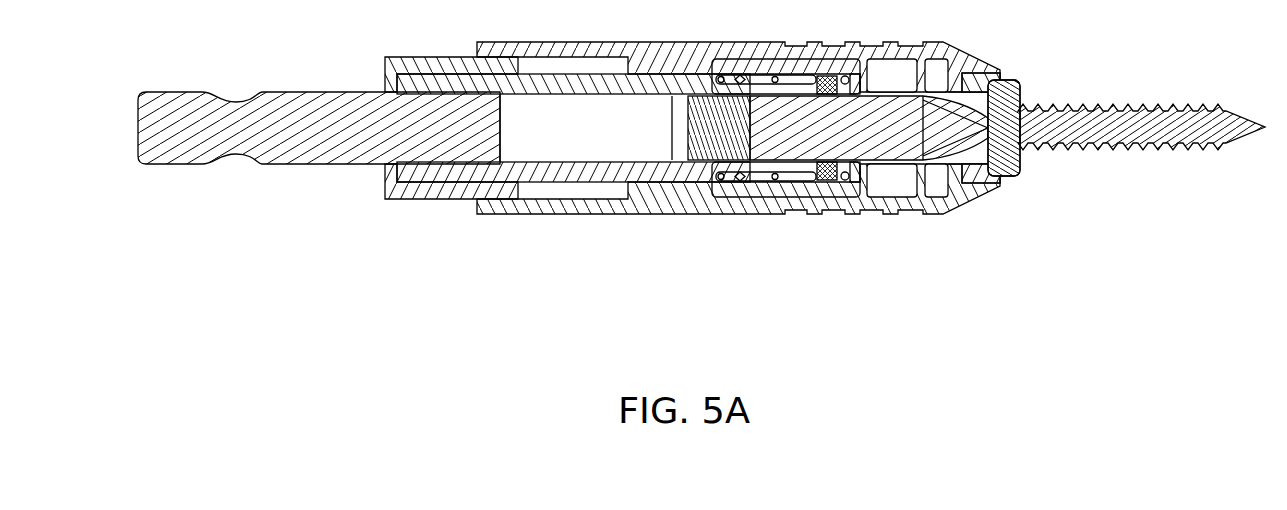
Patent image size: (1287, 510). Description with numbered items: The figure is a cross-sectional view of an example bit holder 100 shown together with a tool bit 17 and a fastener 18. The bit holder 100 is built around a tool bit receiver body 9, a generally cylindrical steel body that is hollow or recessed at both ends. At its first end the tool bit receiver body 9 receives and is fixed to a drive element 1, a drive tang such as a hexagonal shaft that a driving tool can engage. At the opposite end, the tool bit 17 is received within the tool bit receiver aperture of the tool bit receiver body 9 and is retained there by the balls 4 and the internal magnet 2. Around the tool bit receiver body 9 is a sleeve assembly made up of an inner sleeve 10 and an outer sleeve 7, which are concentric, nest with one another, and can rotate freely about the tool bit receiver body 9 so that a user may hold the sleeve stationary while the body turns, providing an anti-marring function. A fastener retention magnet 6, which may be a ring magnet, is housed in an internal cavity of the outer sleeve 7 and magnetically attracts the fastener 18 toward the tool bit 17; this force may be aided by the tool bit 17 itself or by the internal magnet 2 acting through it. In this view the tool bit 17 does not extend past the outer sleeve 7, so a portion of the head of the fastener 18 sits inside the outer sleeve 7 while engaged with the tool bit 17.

The drive element 1 is at (273, 160).
The internal magnet 2 is at (693, 156).
The balls 4 is at (820, 180).
The fastener retention magnet 6 is at (995, 186).
The outer sleeve 7 is at (590, 213).
The tool bit receiver body 9 is at (699, 178).
The inner sleeve 10 is at (413, 200).
The tool bit 17 is at (878, 153).
The fastener 18 is at (1167, 139).
The bit holder 100 is at (890, 283).